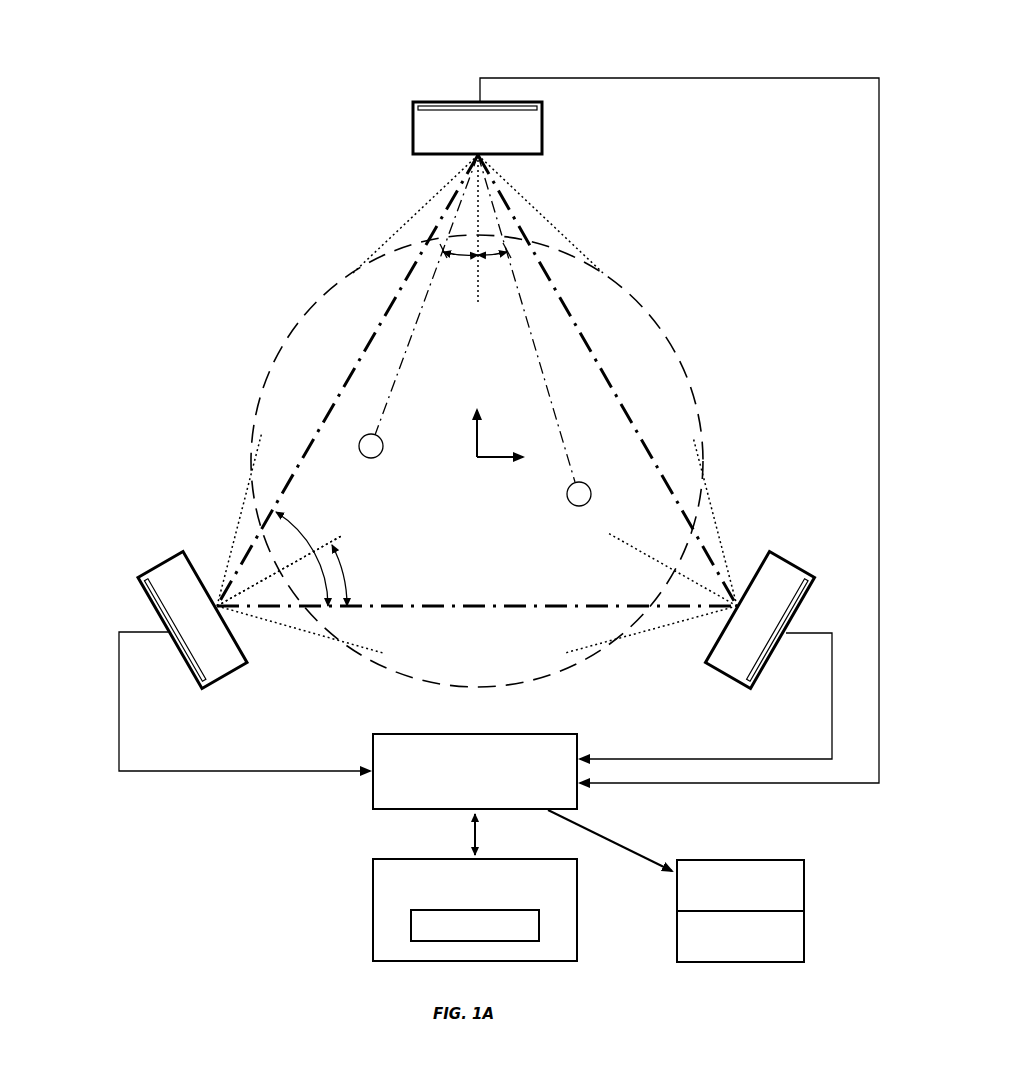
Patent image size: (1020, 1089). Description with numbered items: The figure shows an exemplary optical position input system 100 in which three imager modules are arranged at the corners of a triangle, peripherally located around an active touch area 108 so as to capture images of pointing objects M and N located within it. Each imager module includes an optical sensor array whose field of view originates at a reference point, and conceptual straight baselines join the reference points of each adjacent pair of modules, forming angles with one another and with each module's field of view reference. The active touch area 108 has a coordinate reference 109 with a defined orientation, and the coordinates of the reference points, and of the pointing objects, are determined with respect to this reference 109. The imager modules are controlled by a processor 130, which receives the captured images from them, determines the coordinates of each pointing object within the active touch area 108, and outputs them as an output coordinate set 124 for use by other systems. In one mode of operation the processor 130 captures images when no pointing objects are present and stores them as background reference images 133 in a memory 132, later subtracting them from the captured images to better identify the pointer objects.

The optical position input system 100 is at (128, 70).
The active touch area 108 is at (290, 325).
The coordinate reference 109 is at (477, 460).
The output coordinate set 124 is at (815, 860).
The processor 130 is at (522, 802).
The memory 132 is at (475, 910).
The background reference images 133 is at (475, 925).